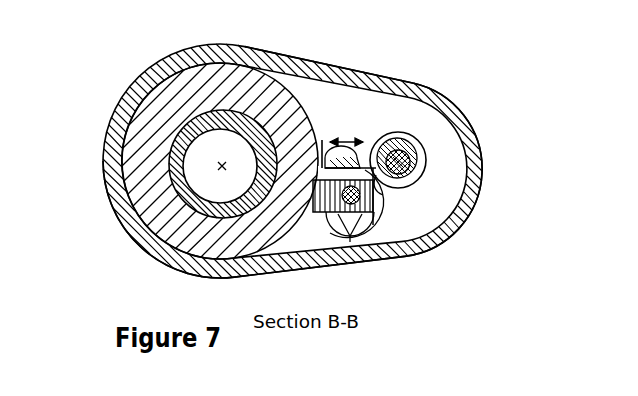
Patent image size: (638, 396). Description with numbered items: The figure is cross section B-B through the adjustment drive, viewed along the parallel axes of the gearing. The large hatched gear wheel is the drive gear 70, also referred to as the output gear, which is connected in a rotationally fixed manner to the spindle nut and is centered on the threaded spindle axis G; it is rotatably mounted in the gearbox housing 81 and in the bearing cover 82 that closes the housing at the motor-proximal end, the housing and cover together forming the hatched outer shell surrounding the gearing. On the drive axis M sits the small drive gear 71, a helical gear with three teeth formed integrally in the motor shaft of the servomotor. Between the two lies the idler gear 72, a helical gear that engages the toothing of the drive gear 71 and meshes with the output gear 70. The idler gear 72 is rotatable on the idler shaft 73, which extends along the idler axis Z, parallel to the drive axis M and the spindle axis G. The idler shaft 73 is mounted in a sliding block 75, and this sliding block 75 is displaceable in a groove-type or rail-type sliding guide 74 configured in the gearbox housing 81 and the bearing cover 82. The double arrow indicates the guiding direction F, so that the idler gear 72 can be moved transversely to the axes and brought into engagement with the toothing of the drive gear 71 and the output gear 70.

The drive gear 70 is at (306, 98).
The drive gear 71 is at (405, 185).
The idler gear 72 is at (192, 87).
The idler shaft 73 is at (380, 200).
The sliding guide 74 is at (382, 254).
The sliding block 75 is at (378, 225).
The gearbox housing 81 is at (226, 46).
The bearing cover 82 is at (173, 62).
The guiding direction F is at (355, 136).
The threaded spindle axis G is at (220, 166).
The drive axis M is at (420, 160).
The idler axis Z is at (350, 240).